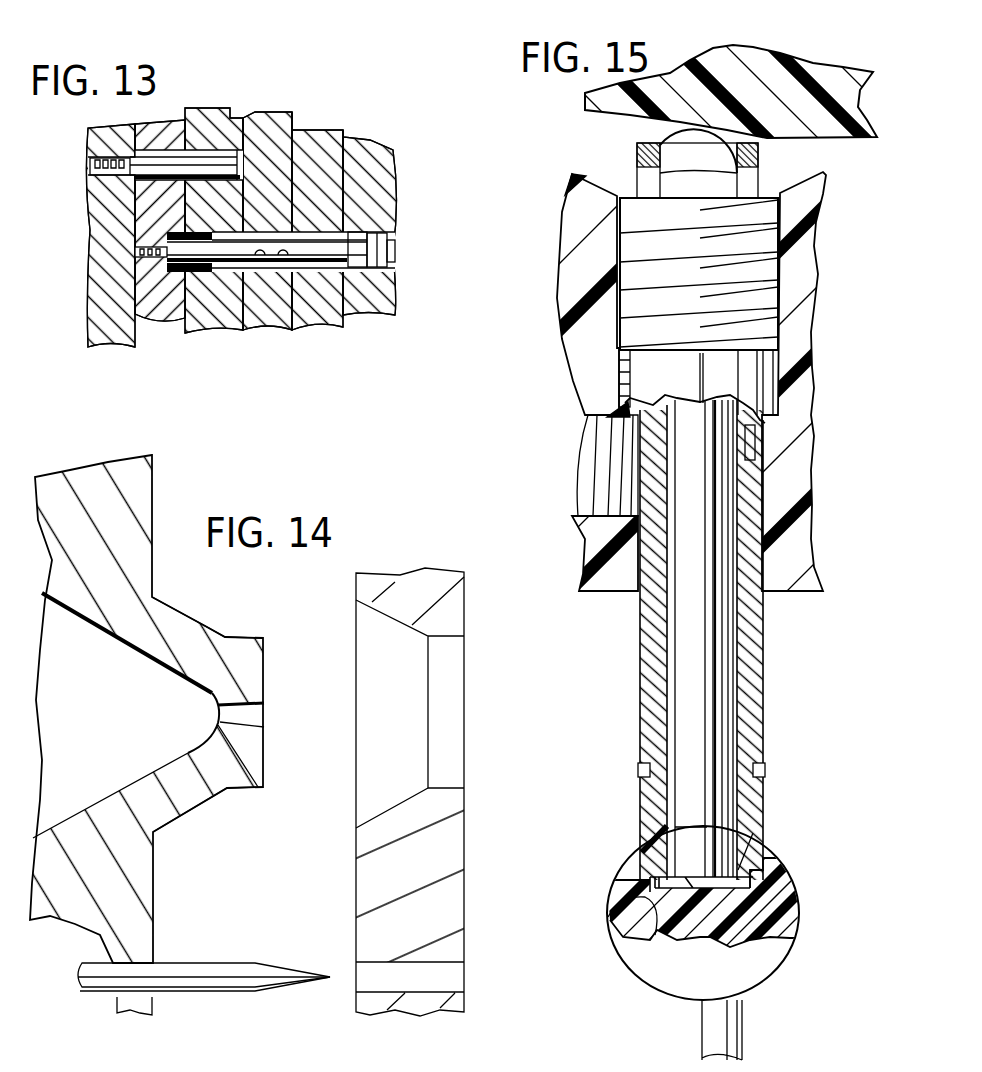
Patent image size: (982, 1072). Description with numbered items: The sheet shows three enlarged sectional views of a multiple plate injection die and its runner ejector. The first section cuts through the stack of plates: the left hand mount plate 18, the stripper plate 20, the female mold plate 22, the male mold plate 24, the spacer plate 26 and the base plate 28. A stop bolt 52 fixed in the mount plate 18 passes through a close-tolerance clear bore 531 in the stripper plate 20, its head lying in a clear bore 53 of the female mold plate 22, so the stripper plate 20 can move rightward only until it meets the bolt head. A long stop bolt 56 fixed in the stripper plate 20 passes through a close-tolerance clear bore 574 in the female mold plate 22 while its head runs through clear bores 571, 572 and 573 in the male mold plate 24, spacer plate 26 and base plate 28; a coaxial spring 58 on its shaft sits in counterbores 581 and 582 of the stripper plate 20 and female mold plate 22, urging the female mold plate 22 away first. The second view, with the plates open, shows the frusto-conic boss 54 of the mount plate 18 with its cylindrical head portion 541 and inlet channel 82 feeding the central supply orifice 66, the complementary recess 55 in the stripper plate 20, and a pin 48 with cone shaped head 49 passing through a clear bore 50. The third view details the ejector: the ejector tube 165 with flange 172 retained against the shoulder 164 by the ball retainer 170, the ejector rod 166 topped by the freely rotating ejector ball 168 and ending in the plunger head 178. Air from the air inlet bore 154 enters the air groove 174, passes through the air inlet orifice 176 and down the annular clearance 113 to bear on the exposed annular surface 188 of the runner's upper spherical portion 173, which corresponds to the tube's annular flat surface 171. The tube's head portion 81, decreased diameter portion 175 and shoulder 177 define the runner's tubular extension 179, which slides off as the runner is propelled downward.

In FIG. 13, the left hand mount plate 18 is at (95, 142).
In FIG. 14, the left hand mount plate 18 is at (123, 903).
In FIG. 13, the stripper plate 20 is at (147, 130).
In FIG. 14, the stripper plate 20 is at (405, 600).
In FIG. 13, the female mold plate 22 is at (227, 112).
In FIG. 13, the male mold plate 24 is at (278, 135).
In FIG. 13, the spacer plate 26 is at (320, 160).
In FIG. 13, the base plate 28 is at (373, 163).
In FIG. 14, the pins 48 is at (198, 970).
In FIG. 14, the cone shaped heads 49 is at (287, 992).
In FIG. 14, the clear bores 50 is at (424, 991).
In FIG. 13, the stop bolts 52 is at (263, 150).
In FIG. 13, the clear bores 53 is at (203, 123).
In FIG. 14, the frusto-conic boss 54 is at (190, 627).
In FIG. 14, the recess 55 is at (393, 805).
In FIG. 13, the long stop bolts 56 is at (367, 238).
In FIG. 13, the coaxial spring 58 is at (170, 232).
In FIG. 14, the central supply orifice 66 is at (253, 713).
In FIG. 15, the head portion 81 is at (640, 868).
In FIG. 14, the inlet channel 82 is at (150, 660).
In FIG. 15, the annular clearance 113 is at (735, 622).
In FIG. 15, the air inlet bore 154 is at (580, 490).
In FIG. 15, the shoulder 164 is at (630, 403).
In FIG. 15, the ejector tube 165 is at (750, 690).
In FIG. 15, the ejector rod 166 is at (715, 672).
In FIG. 15, the ejector ball 168 is at (690, 152).
In FIG. 15, the ball retainer 170 is at (645, 330).
In FIG. 15, the annular flat surface 171 is at (640, 932).
In FIG. 15, the flange 172 is at (653, 383).
In FIG. 15, the upper generally spherical portion 173 is at (770, 882).
In FIG. 15, the air groove 174 is at (757, 440).
In FIG. 15, the decreased diameter portion 175 is at (645, 768).
In FIG. 15, the air inlet orifice 176 is at (600, 435).
In FIG. 15, the shoulder 177 is at (757, 770).
In FIG. 15, the plunger head 178 is at (692, 895).
In FIG. 15, the tubular extension 179 is at (762, 794).
In FIG. 15, the exposed annular surface 188 is at (748, 878).
In FIG. 13, the clear bores 531 is at (137, 180).
In FIG. 14, the cylindrical head portion 541 is at (253, 790).
In FIG. 13, the clear bore 571 is at (293, 325).
In FIG. 13, the clear bore 572 is at (340, 262).
In FIG. 13, the clear bore 573 is at (378, 262).
In FIG. 13, the clear bore 574 is at (238, 262).
In FIG. 13, the counterbore 581 is at (135, 257).
In FIG. 13, the counterbore 582 is at (233, 268).